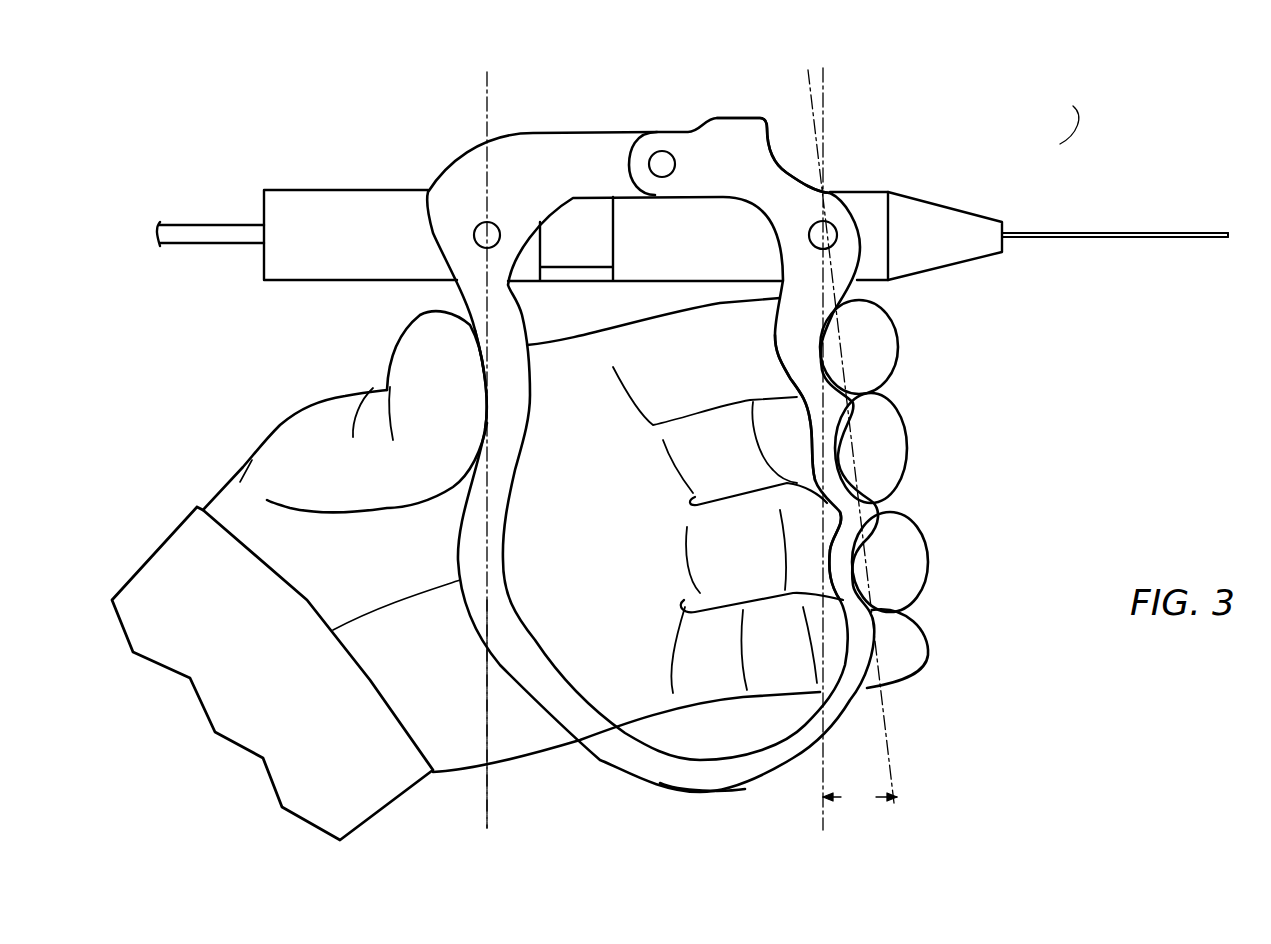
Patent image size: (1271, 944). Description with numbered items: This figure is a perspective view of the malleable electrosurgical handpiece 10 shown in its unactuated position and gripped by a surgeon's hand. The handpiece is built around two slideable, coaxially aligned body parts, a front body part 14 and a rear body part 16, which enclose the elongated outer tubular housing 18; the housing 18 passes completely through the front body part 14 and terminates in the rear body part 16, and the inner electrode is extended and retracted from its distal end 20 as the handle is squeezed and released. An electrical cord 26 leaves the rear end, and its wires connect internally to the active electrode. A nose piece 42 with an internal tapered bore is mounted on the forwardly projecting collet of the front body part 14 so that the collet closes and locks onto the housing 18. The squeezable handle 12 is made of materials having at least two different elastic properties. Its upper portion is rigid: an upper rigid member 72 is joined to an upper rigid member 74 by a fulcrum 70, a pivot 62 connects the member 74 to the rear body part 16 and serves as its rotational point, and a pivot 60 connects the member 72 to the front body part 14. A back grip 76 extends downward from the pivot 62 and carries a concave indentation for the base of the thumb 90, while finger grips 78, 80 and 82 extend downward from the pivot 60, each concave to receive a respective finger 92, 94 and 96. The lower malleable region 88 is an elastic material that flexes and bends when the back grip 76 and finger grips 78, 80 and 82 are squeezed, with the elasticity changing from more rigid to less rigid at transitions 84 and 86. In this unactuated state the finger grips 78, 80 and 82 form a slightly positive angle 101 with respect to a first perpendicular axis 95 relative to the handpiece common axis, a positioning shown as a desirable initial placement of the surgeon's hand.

The electrosurgical handpiece 10 is at (1055, 148).
The squeezable handle 12 is at (438, 532).
The front body part 14 is at (830, 215).
The rear body part 16 is at (305, 190).
The outer tubular housing 18 is at (1160, 233).
The distal end 20 is at (1240, 240).
The electrical cord 26 is at (240, 225).
The nose piece 42 is at (950, 252).
The pivot 60 is at (828, 222).
The pivot 62 is at (478, 230).
The fulcrum 70 is at (660, 151).
The upper rigid member 72 is at (748, 133).
The upper rigid member 74 is at (530, 150).
The back grip 76 is at (503, 375).
The finger grip 78 is at (797, 330).
The finger grip 80 is at (823, 460).
The finger grip 82 is at (840, 560).
The transition 84 is at (480, 583).
The transition 86 is at (858, 620).
The lower malleable region 88 is at (717, 777).
The thumb 90 is at (427, 387).
The finger 92 is at (883, 345).
The finger 94 is at (887, 458).
The finger 96 is at (903, 553).
The first perpendicular axis 95 is at (851, 450).
The angle 101 is at (860, 797).